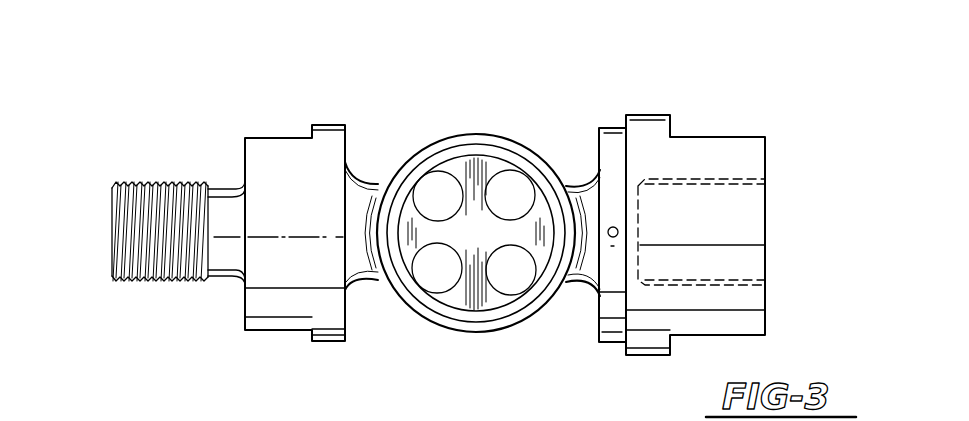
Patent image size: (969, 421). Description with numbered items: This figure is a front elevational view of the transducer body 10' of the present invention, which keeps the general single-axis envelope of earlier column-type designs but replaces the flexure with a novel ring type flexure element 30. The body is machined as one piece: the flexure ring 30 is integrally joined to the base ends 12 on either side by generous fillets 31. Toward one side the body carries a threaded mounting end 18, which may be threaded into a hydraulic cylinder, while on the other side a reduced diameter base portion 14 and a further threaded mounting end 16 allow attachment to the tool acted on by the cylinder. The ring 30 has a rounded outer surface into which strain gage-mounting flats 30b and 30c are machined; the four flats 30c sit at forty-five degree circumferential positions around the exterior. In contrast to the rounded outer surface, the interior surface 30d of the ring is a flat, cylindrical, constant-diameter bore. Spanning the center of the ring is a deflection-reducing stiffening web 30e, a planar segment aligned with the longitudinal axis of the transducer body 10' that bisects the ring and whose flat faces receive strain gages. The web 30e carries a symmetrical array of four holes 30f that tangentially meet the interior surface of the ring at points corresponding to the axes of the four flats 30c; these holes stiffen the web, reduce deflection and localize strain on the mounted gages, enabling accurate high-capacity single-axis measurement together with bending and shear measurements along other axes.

The transducer body 10' is at (154, 369).
The base ends 12 is at (272, 150).
The reduced diameter base portion 14 is at (613, 148).
The threaded mounting end 16 is at (731, 183).
The threaded mounting end 18 is at (158, 183).
The ring type flexure element 30 is at (493, 92).
The strain gage-mounting flat 30b is at (473, 133).
The strain gage mounting flats 30c is at (403, 158).
The interior surface 30d is at (497, 158).
The stiffening web 30e is at (494, 243).
The holes 30f is at (425, 262).
The fillets 31 is at (364, 193).